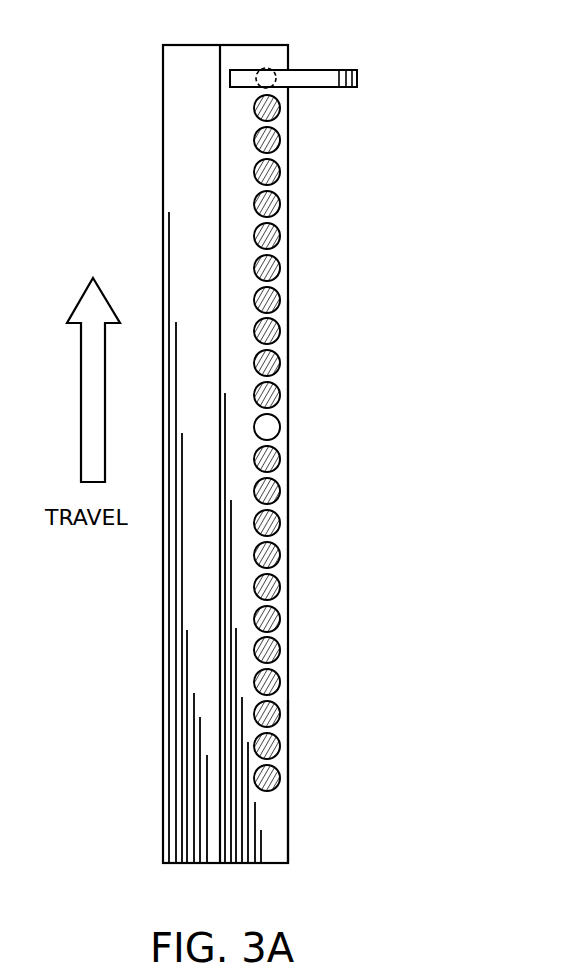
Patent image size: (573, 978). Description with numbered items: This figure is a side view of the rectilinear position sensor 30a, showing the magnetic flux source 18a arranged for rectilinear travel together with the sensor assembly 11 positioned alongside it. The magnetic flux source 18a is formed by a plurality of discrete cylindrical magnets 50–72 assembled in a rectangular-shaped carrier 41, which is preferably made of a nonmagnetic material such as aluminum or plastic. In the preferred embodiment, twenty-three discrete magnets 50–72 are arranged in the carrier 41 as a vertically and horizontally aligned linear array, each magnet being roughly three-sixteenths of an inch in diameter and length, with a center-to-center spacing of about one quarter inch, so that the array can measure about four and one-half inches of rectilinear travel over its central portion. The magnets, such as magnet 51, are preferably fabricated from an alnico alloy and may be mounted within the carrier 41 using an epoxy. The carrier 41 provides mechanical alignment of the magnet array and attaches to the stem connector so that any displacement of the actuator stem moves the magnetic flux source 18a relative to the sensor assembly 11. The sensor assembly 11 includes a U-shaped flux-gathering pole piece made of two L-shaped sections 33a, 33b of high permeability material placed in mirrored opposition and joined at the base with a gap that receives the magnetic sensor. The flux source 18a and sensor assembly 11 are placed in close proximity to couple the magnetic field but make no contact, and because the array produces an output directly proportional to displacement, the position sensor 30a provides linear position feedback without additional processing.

The sensor assembly 11 is at (359, 78).
The magnetic flux source 18a is at (178, 865).
The rectilinear position sensor 30a is at (340, 463).
The L-shaped section 33a is at (345, 68).
The L-shaped section 33b is at (293, 78).
The carrier 41 is at (290, 803).
The discrete cylindrical magnet 50 is at (285, 68).
The discrete cylindrical magnet 51 is at (278, 111).
The discrete cylindrical magnet 72 is at (256, 776).